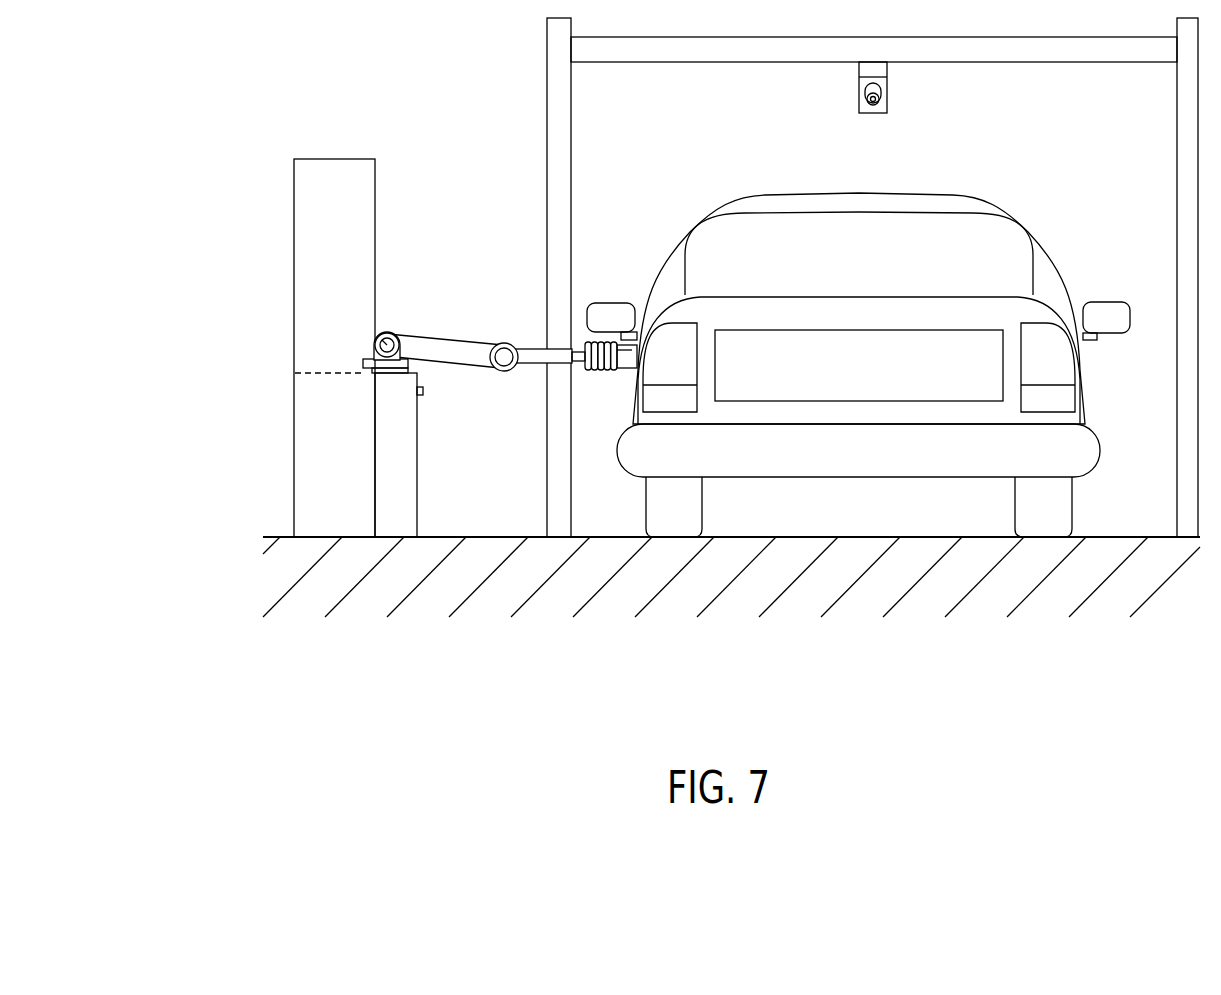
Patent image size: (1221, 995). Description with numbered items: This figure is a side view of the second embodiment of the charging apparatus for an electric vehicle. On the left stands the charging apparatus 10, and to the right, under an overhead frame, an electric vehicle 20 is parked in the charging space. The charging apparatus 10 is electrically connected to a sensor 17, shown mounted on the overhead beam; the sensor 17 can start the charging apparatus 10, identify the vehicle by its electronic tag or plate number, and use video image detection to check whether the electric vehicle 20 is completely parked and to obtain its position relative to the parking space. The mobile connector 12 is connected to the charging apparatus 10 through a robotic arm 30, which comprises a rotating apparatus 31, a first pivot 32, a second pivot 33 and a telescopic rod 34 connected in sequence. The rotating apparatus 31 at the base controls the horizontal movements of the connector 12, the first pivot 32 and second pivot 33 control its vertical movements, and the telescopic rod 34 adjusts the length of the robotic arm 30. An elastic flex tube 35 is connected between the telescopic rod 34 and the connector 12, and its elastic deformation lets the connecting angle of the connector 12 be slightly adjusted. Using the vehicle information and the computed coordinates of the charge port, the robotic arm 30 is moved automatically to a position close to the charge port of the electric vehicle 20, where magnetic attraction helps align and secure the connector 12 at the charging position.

The charging apparatus 10 is at (283, 223).
The connector 12 is at (612, 373).
The sensor 17 is at (868, 97).
The electric vehicle 20 is at (990, 193).
The robotic arm 30 is at (430, 326).
The rotating apparatus 31 is at (388, 370).
The first pivot 32 is at (378, 333).
The second pivot 33 is at (508, 340).
The telescopic rod 34 is at (540, 355).
The elastic flex tube 35 is at (572, 340).